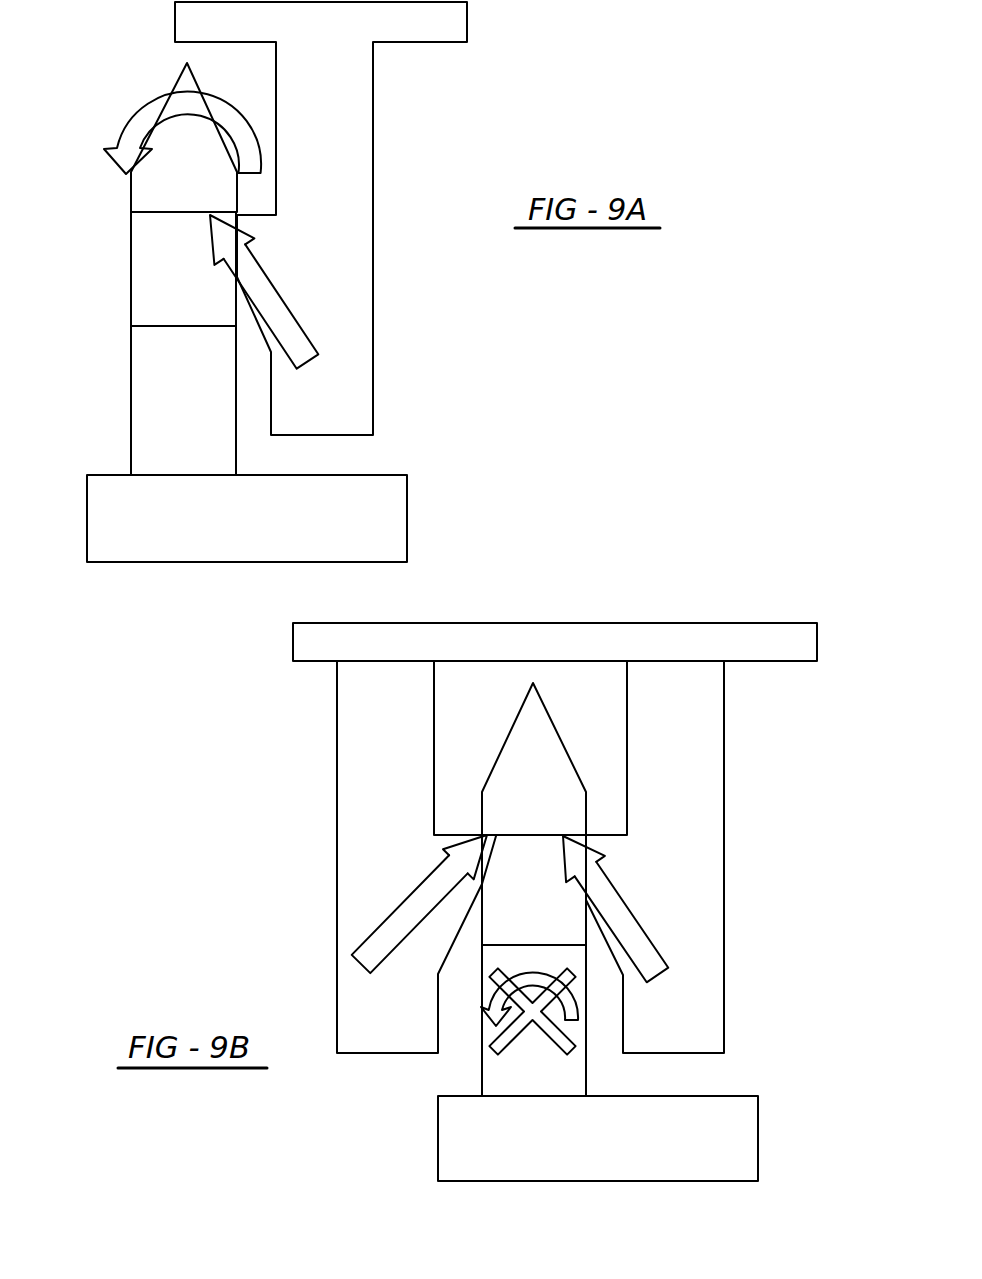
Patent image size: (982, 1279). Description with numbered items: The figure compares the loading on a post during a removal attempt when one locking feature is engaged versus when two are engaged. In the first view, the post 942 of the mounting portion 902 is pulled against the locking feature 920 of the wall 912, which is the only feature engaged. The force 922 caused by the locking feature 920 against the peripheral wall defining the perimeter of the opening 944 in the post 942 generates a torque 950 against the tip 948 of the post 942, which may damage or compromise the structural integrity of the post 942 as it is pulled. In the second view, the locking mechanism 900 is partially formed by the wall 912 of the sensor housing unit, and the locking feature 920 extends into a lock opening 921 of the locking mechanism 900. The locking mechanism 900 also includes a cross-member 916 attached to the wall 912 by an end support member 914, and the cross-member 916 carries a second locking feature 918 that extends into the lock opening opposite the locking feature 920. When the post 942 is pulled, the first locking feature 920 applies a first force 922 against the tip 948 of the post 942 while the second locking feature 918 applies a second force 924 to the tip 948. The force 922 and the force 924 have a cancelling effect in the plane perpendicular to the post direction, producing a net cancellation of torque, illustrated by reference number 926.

In FIG. 9B, the locking mechanism 900 is at (750, 585).
In FIG. 9A, the mounting portion 902 is at (375, 523).
In FIG. 9B, the mounting portion 902 is at (733, 1133).
In FIG. 9A, the wall 912 is at (353, 93).
In FIG. 9B, the wall 912 is at (685, 752).
In FIG. 9B, the end support member 914 is at (538, 637).
In FIG. 9B, the cross-member 916 is at (372, 750).
In FIG. 9B, the second locking feature 918 is at (437, 842).
In FIG. 9A, the first locking feature 920 is at (260, 223).
In FIG. 9B, the first locking feature 920 is at (610, 843).
In FIG. 9B, the lock opening 921 is at (476, 697).
In FIG. 9A, the first force 922 is at (308, 333).
In FIG. 9B, the first force 922 is at (648, 935).
In FIG. 9B, the second force 924 is at (387, 917).
In FIG. 9B, the net cancellation of torque 926 is at (525, 1033).
In FIG. 9A, the post 942 is at (103, 375).
In FIG. 9B, the post 942 is at (546, 1066).
In FIG. 9A, the opening 944 is at (172, 253).
In FIG. 9B, the opening 944 is at (525, 902).
In FIG. 9A, the tip 948 is at (188, 153).
In FIG. 9B, the tip 948 is at (530, 740).
In FIG. 9A, the torque 950 is at (150, 100).